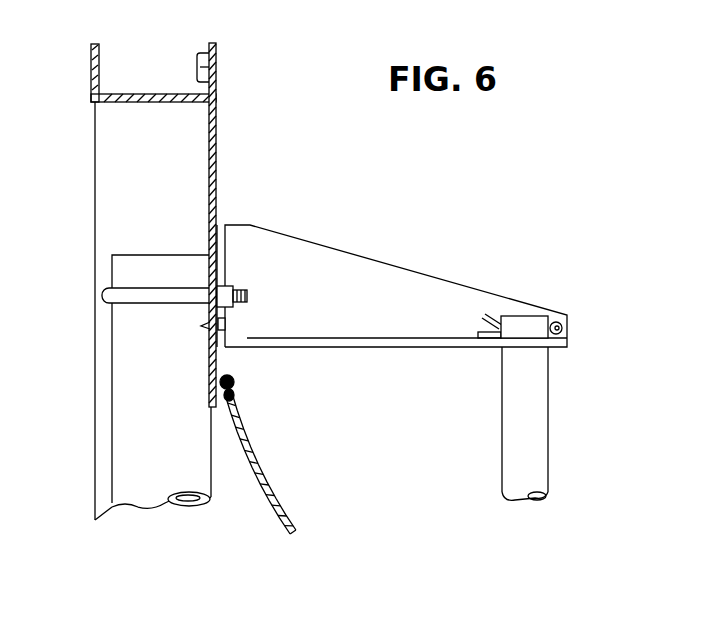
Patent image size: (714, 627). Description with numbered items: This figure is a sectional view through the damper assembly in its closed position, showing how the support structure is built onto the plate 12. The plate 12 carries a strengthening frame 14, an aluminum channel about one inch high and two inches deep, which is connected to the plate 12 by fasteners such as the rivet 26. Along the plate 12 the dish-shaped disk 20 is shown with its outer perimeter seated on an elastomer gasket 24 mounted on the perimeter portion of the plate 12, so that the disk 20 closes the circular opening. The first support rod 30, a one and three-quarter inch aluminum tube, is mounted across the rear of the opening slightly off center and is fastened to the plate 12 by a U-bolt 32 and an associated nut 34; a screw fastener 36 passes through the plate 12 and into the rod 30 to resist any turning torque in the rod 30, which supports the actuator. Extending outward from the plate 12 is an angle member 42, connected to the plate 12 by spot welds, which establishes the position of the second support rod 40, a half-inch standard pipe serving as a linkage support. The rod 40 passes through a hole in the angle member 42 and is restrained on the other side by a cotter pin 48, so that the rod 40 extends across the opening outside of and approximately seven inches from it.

The plate 12 is at (218, 120).
The strengthening frame 14 is at (125, 92).
The dish-shaped disk 20 is at (272, 458).
The elastomer gasket 24 is at (235, 380).
The rivet 26 is at (197, 60).
The first support rod 30 is at (142, 452).
The U-bolt 32 is at (133, 288).
The nut 34 is at (221, 293).
The screw fastener 36 is at (226, 327).
The second support rod 40 is at (530, 442).
The angle member 42 is at (432, 285).
The cotter pin 48 is at (564, 328).